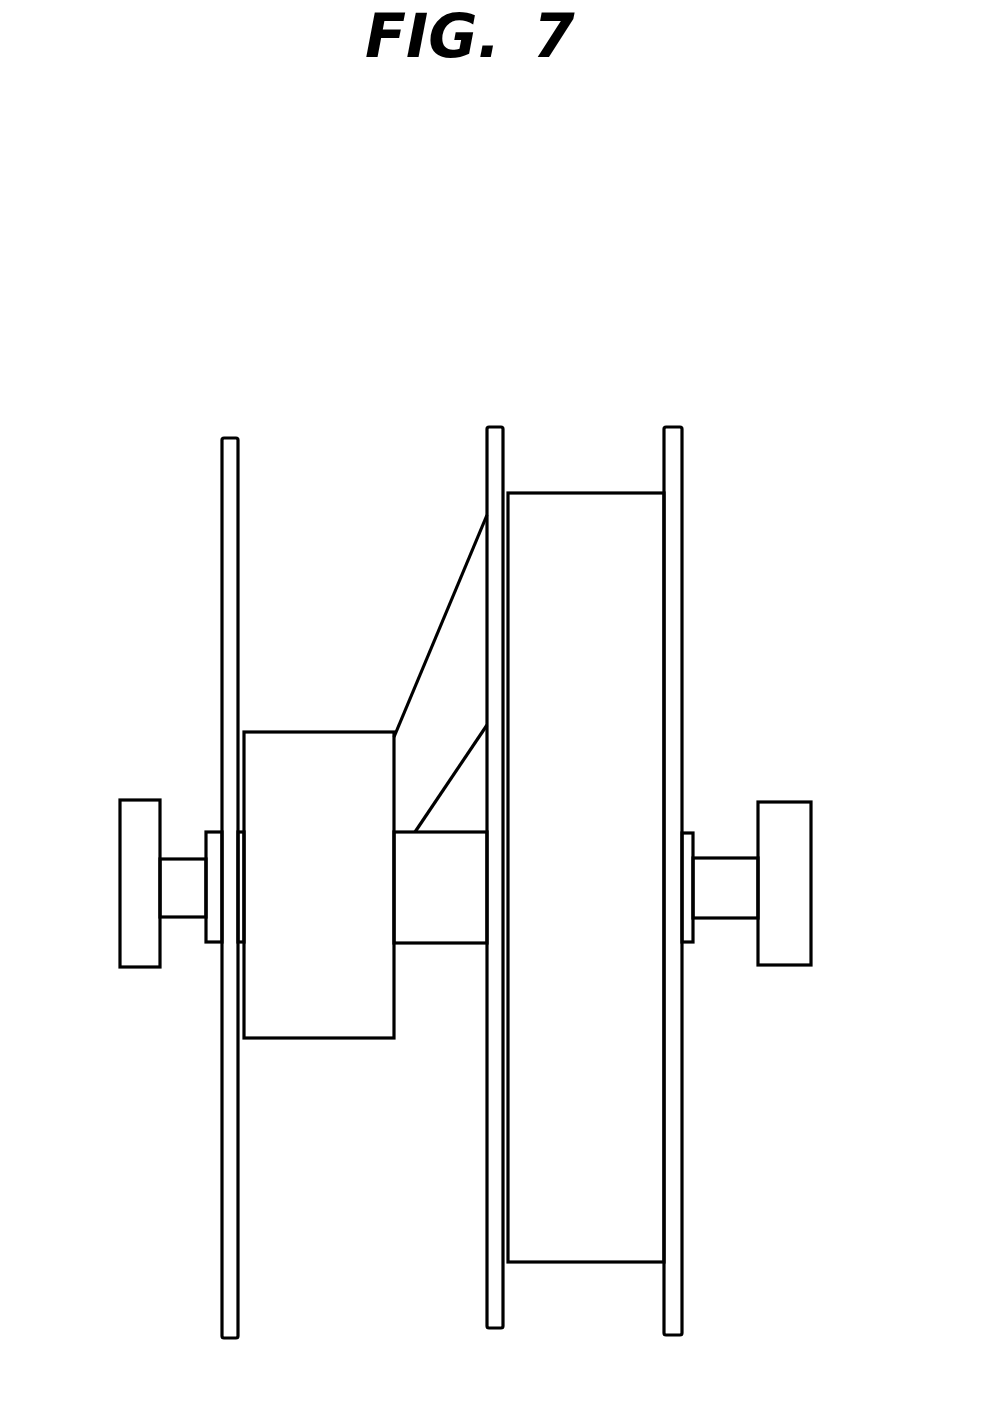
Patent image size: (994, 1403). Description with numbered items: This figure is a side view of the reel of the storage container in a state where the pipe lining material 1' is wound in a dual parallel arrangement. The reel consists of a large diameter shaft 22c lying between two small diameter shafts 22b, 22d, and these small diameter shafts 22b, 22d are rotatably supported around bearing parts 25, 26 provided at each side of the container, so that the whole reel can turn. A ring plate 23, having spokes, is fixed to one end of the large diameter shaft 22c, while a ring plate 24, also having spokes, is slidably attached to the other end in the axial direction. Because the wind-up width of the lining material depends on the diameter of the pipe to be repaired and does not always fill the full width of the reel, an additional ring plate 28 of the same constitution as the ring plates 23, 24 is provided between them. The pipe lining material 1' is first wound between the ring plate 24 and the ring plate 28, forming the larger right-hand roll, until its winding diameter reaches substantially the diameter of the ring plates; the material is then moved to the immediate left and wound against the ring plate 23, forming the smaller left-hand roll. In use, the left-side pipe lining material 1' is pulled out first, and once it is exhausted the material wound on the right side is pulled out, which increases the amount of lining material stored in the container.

The pipe lining material 1' is at (454, 792).
The ring plate 23 is at (228, 437).
The ring plate 24 is at (680, 427).
The bearing part 25 is at (140, 800).
The bearing part 26 is at (783, 802).
The ring plate 28 is at (495, 427).
The small diameter shaft 22b is at (188, 917).
The large diameter shaft 22c is at (452, 943).
The small diameter shaft 22d is at (720, 918).